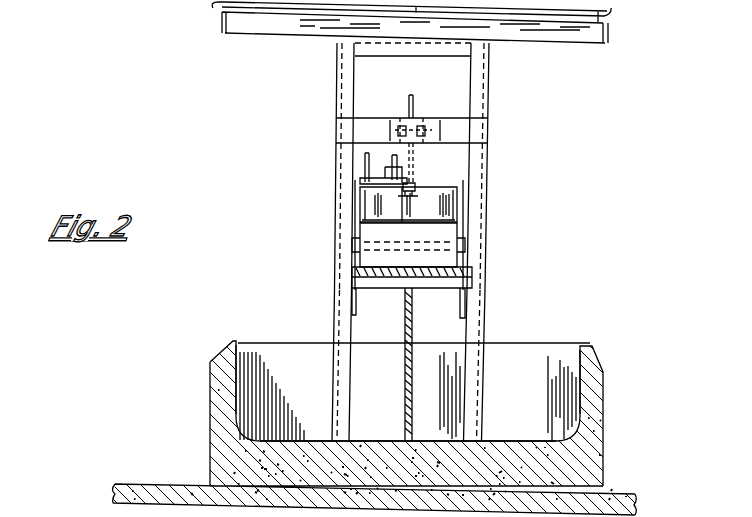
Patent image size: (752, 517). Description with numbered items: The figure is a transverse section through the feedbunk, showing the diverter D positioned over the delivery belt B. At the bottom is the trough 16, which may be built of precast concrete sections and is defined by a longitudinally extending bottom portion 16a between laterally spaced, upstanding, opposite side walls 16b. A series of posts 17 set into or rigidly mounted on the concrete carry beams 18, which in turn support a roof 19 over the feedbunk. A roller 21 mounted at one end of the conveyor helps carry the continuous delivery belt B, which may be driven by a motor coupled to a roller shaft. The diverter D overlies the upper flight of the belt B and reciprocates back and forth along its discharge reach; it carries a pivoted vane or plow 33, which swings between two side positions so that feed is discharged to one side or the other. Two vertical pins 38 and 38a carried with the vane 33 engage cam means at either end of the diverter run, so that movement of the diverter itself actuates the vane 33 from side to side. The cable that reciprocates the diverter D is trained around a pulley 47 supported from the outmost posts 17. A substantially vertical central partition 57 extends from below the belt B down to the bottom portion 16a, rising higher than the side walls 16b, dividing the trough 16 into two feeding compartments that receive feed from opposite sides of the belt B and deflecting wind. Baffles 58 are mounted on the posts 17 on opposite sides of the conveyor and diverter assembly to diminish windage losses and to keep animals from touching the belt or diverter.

The trough 16 is at (600, 462).
The bottom portion 16a is at (492, 442).
The side walls 16b is at (240, 358).
The posts 17 is at (484, 322).
The beams 18 is at (584, 43).
The roof 19 is at (286, 4).
The roller 21 is at (368, 236).
The vane 33 is at (362, 200).
The vertical pin 38 is at (368, 160).
The vertical pin 38a is at (405, 160).
The pulley 47 is at (420, 103).
The partition 57 is at (413, 310).
The baffles 58 is at (338, 92).
The delivery belt B is at (397, 257).
The diverter D is at (516, 211).